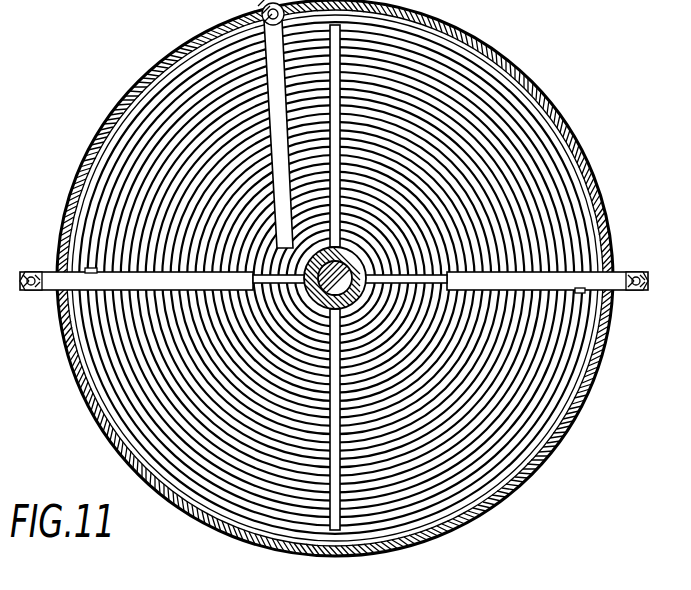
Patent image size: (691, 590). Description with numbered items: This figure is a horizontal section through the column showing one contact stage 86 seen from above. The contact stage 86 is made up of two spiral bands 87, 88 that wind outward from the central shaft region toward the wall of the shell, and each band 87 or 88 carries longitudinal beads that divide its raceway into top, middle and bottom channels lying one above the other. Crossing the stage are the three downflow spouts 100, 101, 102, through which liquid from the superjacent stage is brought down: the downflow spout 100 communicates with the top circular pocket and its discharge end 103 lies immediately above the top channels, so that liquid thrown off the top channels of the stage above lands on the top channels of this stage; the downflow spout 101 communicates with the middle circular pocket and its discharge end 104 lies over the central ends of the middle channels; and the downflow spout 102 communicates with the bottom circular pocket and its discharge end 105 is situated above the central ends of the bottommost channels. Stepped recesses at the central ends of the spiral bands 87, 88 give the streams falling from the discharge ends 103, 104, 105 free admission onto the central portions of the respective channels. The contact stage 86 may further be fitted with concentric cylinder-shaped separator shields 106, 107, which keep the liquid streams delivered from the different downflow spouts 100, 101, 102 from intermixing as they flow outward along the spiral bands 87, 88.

The contact stage 86 is at (565, 182).
The spiral band 87 is at (558, 258).
The spiral band 88 is at (583, 210).
The downflow spout 100 is at (640, 292).
The downflow spout 101 is at (27, 268).
The downflow spout 102 is at (268, 42).
The discharge end 103 is at (450, 284).
The discharge end 104 is at (253, 277).
The discharge end 105 is at (283, 245).
The separator shield 106 is at (368, 212).
The separator shield 107 is at (432, 247).